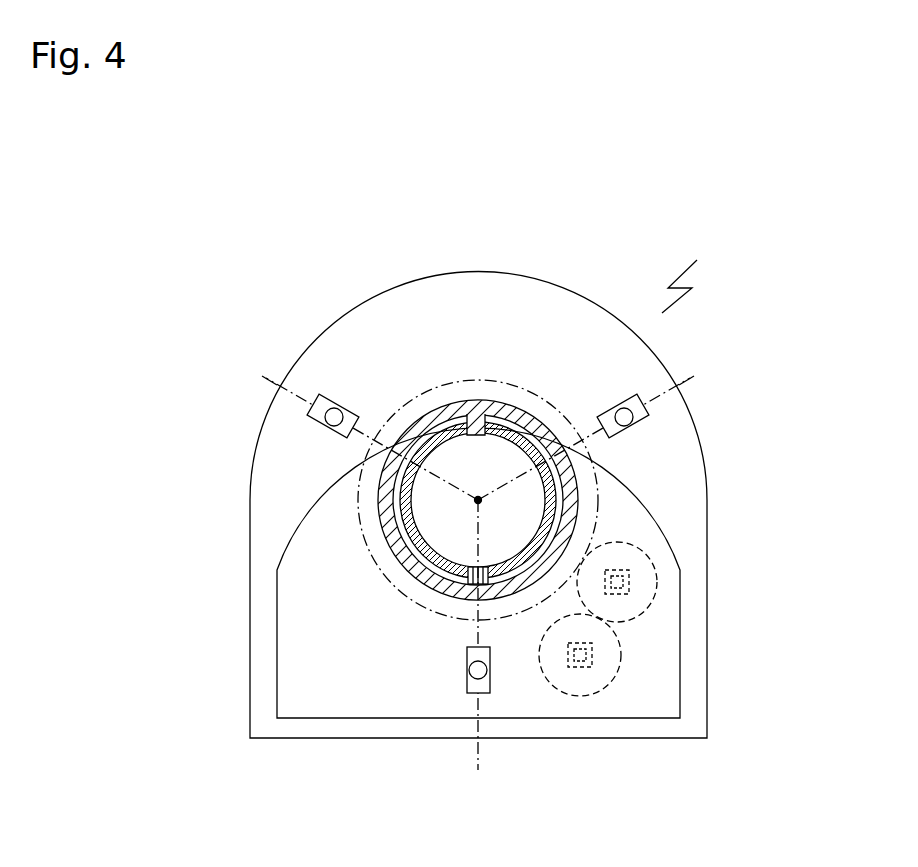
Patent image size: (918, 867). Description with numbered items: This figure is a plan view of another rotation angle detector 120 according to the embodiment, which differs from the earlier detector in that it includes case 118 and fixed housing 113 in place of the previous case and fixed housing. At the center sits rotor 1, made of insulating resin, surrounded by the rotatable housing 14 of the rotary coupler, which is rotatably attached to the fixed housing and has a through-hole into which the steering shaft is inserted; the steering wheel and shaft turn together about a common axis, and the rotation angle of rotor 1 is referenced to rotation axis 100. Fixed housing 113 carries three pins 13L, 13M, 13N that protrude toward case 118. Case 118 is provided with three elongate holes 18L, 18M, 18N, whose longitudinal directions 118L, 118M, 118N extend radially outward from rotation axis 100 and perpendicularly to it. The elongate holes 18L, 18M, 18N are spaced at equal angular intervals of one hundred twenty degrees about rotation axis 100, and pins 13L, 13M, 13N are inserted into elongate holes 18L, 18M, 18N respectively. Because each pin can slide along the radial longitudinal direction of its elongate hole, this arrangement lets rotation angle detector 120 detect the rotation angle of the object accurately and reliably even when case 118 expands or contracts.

The rotor 1 is at (357, 513).
The pin 13L is at (327, 418).
The pin 13M is at (472, 676).
The pin 13N is at (634, 423).
The rotatable housing 14 is at (580, 507).
The elongate hole 18L is at (312, 403).
The elongate hole 18M is at (481, 690).
The elongate hole 18N is at (648, 402).
The rotation axis 100 is at (478, 500).
The fixed housing 113 is at (561, 290).
The case 118 is at (385, 318).
The longitudinal direction 118L is at (279, 385).
The longitudinal direction 118M is at (477, 740).
The longitudinal direction 118N is at (681, 385).
The rotation angle detector 120 is at (692, 276).